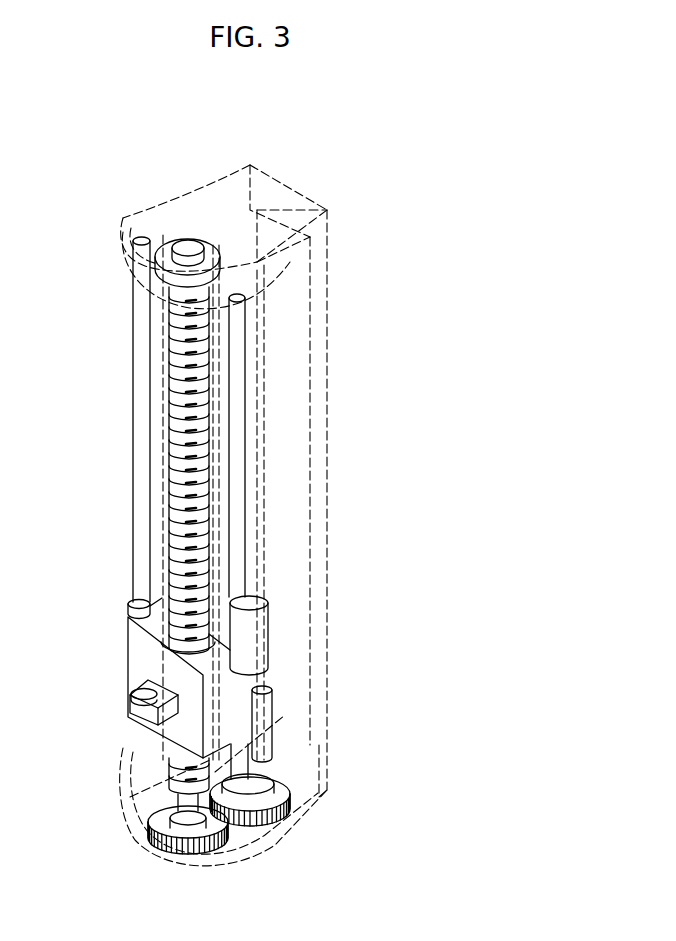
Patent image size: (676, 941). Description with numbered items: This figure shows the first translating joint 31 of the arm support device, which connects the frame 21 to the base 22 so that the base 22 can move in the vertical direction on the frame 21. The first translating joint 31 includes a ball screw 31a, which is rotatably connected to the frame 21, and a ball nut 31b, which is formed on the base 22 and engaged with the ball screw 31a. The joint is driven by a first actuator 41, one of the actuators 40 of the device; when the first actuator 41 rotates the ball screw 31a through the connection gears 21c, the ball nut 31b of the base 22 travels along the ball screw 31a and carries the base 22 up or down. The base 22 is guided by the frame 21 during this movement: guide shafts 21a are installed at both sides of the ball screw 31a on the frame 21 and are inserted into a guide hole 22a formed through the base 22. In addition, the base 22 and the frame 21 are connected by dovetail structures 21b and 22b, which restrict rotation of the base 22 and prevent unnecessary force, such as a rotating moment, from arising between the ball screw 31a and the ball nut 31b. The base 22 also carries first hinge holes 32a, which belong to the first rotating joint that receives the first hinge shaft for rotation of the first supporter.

The frame 21 is at (284, 197).
The guide shafts 21a is at (140, 428).
The dovetail structure 21b is at (212, 635).
The connection gears 21c is at (258, 822).
The base 22 is at (137, 660).
The guide hole 22a is at (137, 612).
The dovetail structure 22b is at (212, 635).
The first translating joint 31 is at (225, 525).
The ball screw 31a is at (175, 343).
The ball nut 31b is at (140, 664).
The first hinge holes 32a is at (135, 725).
The first actuator 41 is at (290, 770).
The actuators 40 is at (270, 728).